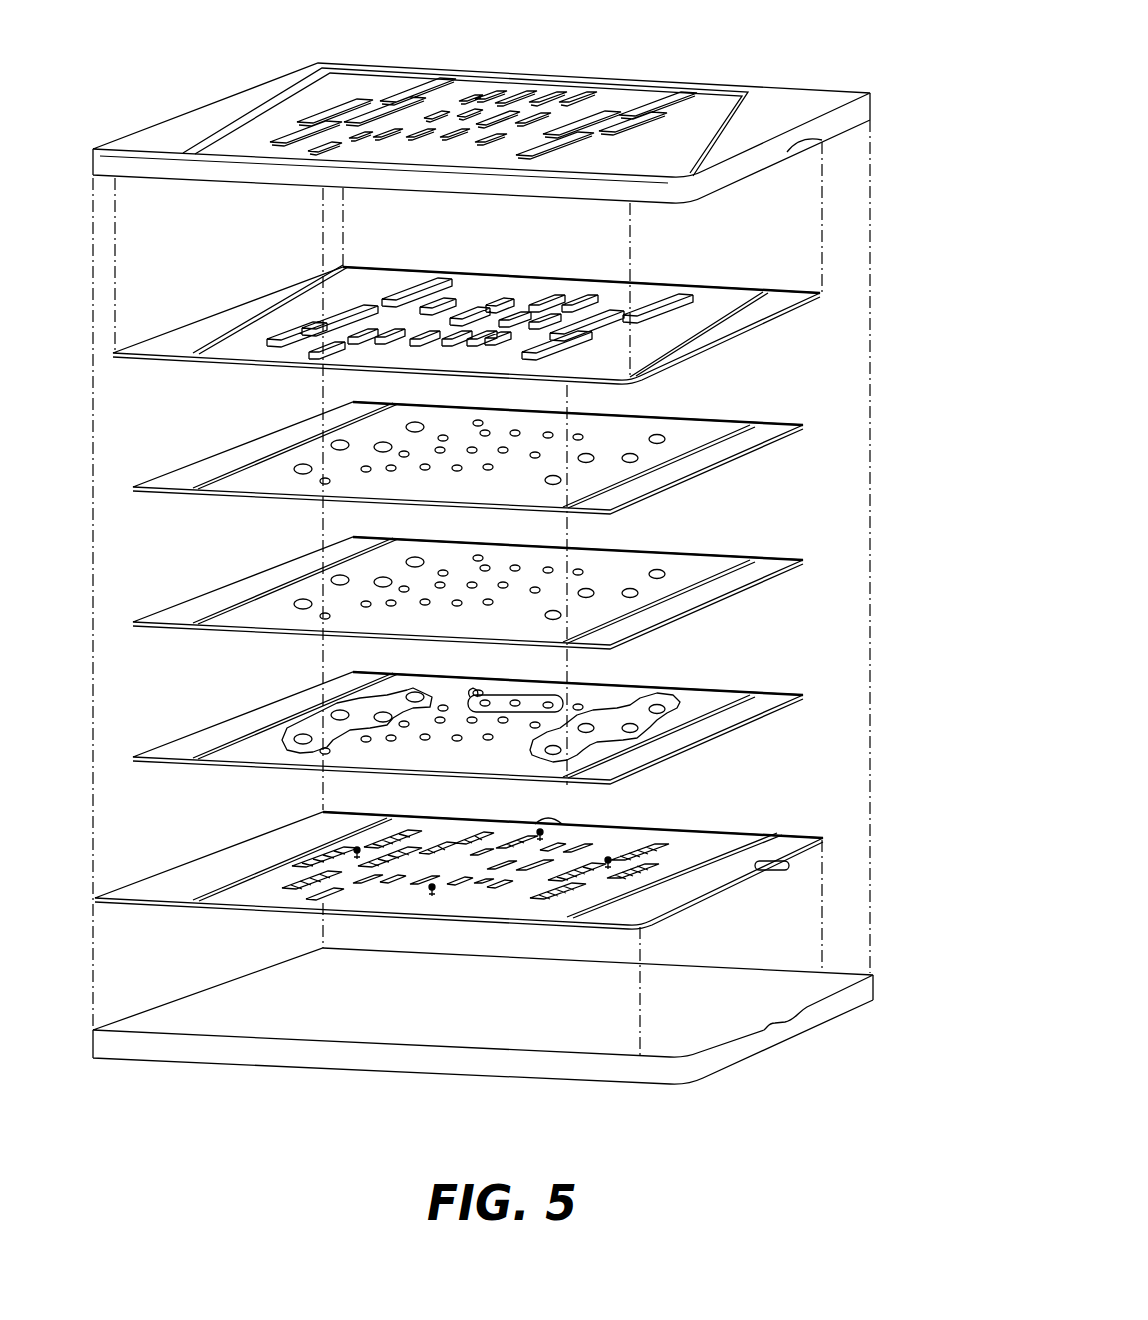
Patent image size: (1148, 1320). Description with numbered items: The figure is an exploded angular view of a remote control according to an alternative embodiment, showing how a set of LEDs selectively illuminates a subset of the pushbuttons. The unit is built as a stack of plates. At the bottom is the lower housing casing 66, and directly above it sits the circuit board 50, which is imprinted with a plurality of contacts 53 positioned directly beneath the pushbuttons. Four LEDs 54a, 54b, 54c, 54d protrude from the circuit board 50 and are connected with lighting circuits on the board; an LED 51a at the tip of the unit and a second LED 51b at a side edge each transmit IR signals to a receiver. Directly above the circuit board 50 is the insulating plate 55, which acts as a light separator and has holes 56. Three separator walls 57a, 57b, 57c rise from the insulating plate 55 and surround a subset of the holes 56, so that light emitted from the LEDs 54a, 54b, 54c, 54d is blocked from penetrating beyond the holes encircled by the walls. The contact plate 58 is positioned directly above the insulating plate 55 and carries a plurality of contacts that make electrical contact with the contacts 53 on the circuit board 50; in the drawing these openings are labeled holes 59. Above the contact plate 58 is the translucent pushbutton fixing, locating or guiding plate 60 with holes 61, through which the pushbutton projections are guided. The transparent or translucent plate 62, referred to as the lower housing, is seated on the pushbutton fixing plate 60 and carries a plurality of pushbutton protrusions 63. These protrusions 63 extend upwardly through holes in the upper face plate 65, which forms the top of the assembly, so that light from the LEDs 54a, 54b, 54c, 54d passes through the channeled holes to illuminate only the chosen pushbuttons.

The upper face plate 65 is at (788, 97).
The lower housing casing 66 is at (872, 987).
The transparent or translucent plate 62 is at (760, 308).
The pushbutton protrusions 63 is at (515, 292).
The pushbutton fixing plate 60 is at (778, 428).
The holes 61 is at (518, 432).
The contact plate 58 is at (778, 563).
The through holes 59 is at (518, 567).
The insulating plate 55 is at (780, 698).
The holes 56 is at (476, 697).
The separator wall 57a is at (685, 694).
The separator wall 57b is at (532, 702).
The separator wall 57c is at (333, 713).
The circuit board 50 is at (780, 838).
The LED 51a is at (772, 872).
The second LED 51b is at (545, 823).
The contacts 53 is at (640, 852).
The LED 54a is at (608, 869).
The LED 54b is at (432, 896).
The LED 54c is at (538, 841).
The LED 54d is at (357, 858).